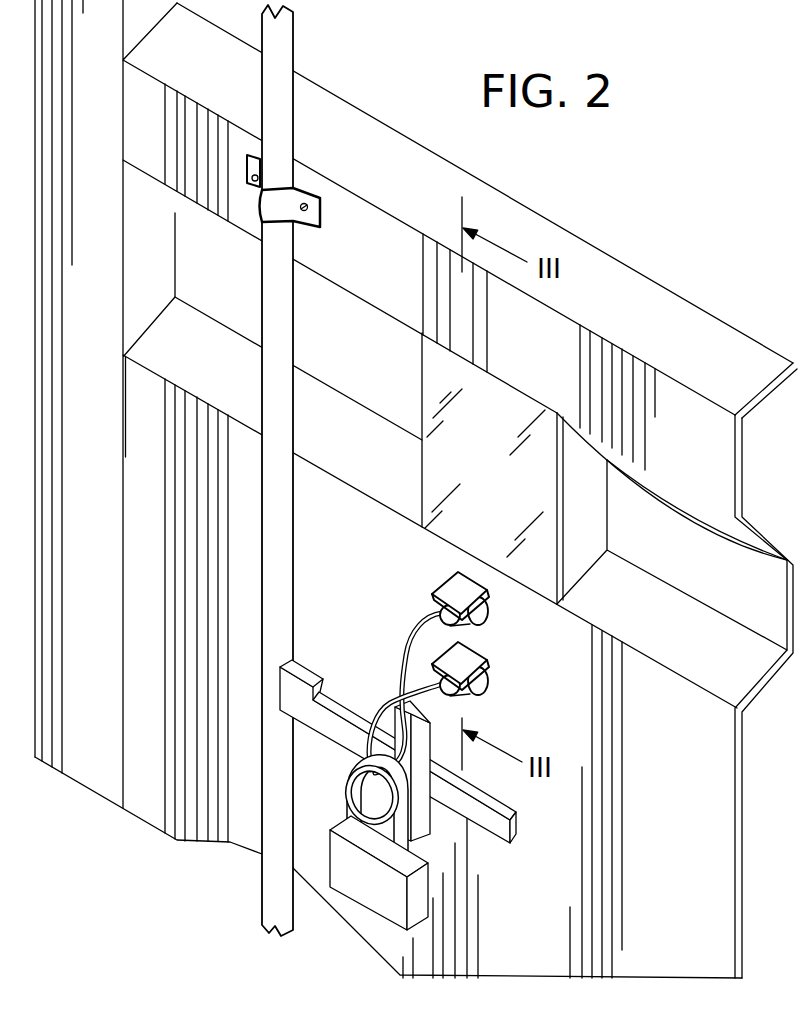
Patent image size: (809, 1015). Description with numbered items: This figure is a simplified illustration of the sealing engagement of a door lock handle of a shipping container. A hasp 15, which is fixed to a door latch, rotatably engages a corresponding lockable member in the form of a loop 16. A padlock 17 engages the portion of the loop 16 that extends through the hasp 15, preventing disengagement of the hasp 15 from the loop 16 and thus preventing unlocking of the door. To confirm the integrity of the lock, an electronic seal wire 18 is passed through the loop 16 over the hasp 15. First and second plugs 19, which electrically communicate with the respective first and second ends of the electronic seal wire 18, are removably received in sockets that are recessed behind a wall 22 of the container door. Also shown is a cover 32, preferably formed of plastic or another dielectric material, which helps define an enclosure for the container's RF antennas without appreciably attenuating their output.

The hasp 15 is at (517, 840).
The loop 16 is at (371, 777).
The padlock 17 is at (350, 888).
The electronic seal wire 18 is at (403, 649).
The plugs 19 is at (488, 667).
The wall 22 is at (713, 783).
The cover 32 is at (533, 493).